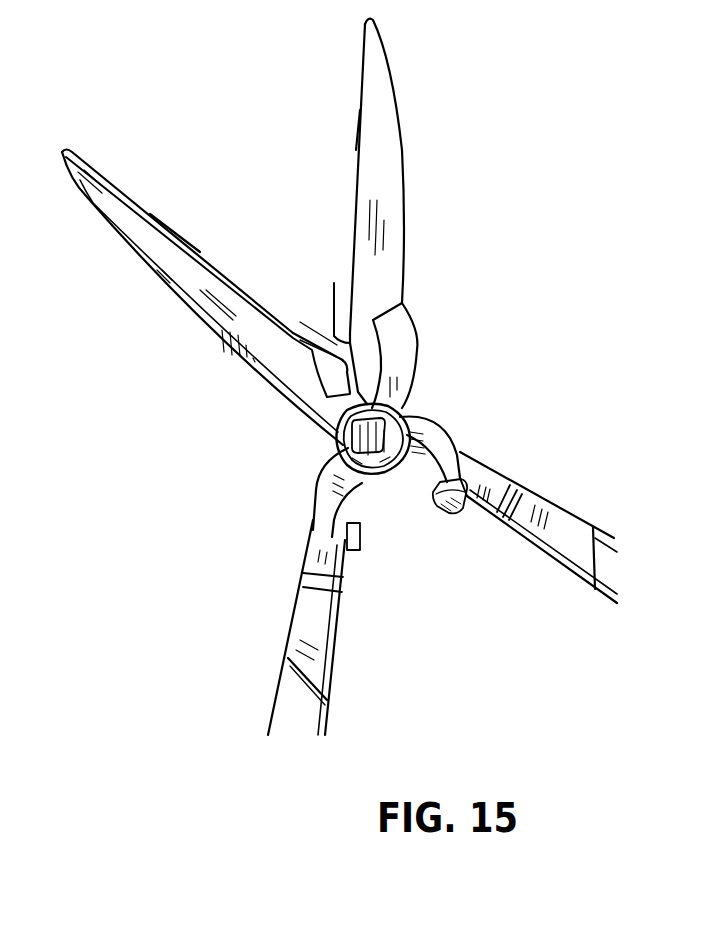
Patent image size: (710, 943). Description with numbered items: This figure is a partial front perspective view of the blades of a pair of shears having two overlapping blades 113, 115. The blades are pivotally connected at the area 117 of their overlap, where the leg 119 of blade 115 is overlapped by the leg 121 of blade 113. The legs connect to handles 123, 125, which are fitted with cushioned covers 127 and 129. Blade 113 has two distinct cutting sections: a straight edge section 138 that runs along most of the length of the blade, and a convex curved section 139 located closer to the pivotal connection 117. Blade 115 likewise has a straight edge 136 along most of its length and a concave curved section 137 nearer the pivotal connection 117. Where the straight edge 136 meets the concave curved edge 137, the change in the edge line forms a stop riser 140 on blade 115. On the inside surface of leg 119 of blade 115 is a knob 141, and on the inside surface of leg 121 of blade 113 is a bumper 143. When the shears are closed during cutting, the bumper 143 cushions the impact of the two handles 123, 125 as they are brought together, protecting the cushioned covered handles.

The blade 113 is at (157, 283).
The blade 115 is at (403, 160).
The pivotal connection 117 is at (403, 412).
The leg 119 is at (318, 486).
The leg 121 is at (447, 430).
The handle 123 is at (298, 615).
The handle 125 is at (561, 530).
The cushioned cover 127 is at (330, 706).
The cushioned cover 129 is at (613, 537).
The straight edge 136 is at (358, 120).
The concave curved section 137 is at (327, 355).
The straight edge section 138 is at (173, 233).
The convex curved section 139 is at (327, 360).
The stop riser 140 is at (336, 332).
The knob 141 is at (363, 540).
The bumper 143 is at (440, 517).